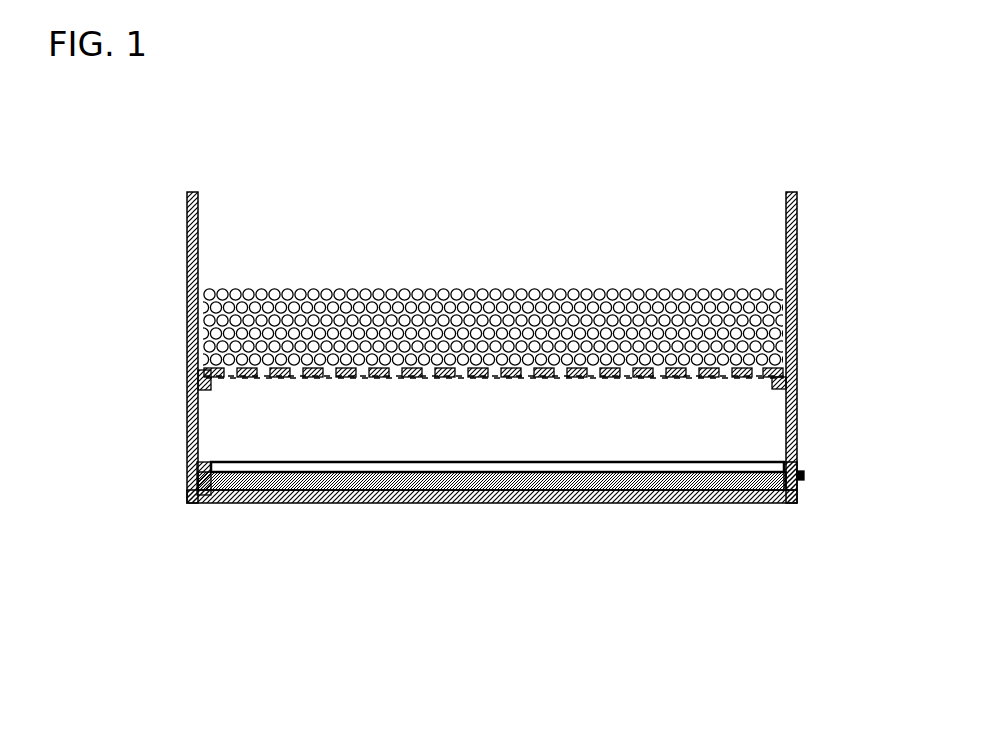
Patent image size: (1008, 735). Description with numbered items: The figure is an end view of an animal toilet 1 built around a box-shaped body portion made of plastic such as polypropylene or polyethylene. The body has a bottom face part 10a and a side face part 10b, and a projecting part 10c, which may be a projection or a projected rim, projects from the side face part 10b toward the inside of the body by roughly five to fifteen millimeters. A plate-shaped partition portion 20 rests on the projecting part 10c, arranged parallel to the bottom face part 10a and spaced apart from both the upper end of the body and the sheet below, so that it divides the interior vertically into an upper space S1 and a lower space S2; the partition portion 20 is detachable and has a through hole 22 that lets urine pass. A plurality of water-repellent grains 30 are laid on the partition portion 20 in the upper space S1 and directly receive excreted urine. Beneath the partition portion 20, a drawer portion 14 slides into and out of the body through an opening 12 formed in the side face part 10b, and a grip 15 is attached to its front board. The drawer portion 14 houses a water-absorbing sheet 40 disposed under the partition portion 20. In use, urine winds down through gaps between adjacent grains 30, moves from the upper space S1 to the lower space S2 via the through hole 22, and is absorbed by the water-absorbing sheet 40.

The animal toilet 1 is at (465, 335).
The bottom face part 10a is at (505, 506).
The side face part 10b is at (185, 360).
The projecting part 10c is at (772, 383).
The opening 12 is at (797, 463).
The drawer portion 14 is at (580, 474).
The grip 15 is at (806, 477).
The partition portion 20 is at (459, 380).
The through hole 22 is at (391, 378).
The grains 30 is at (552, 290).
The water-absorbing sheet 40 is at (306, 470).
The upper space S1 is at (489, 261).
The lower space S2 is at (492, 421).